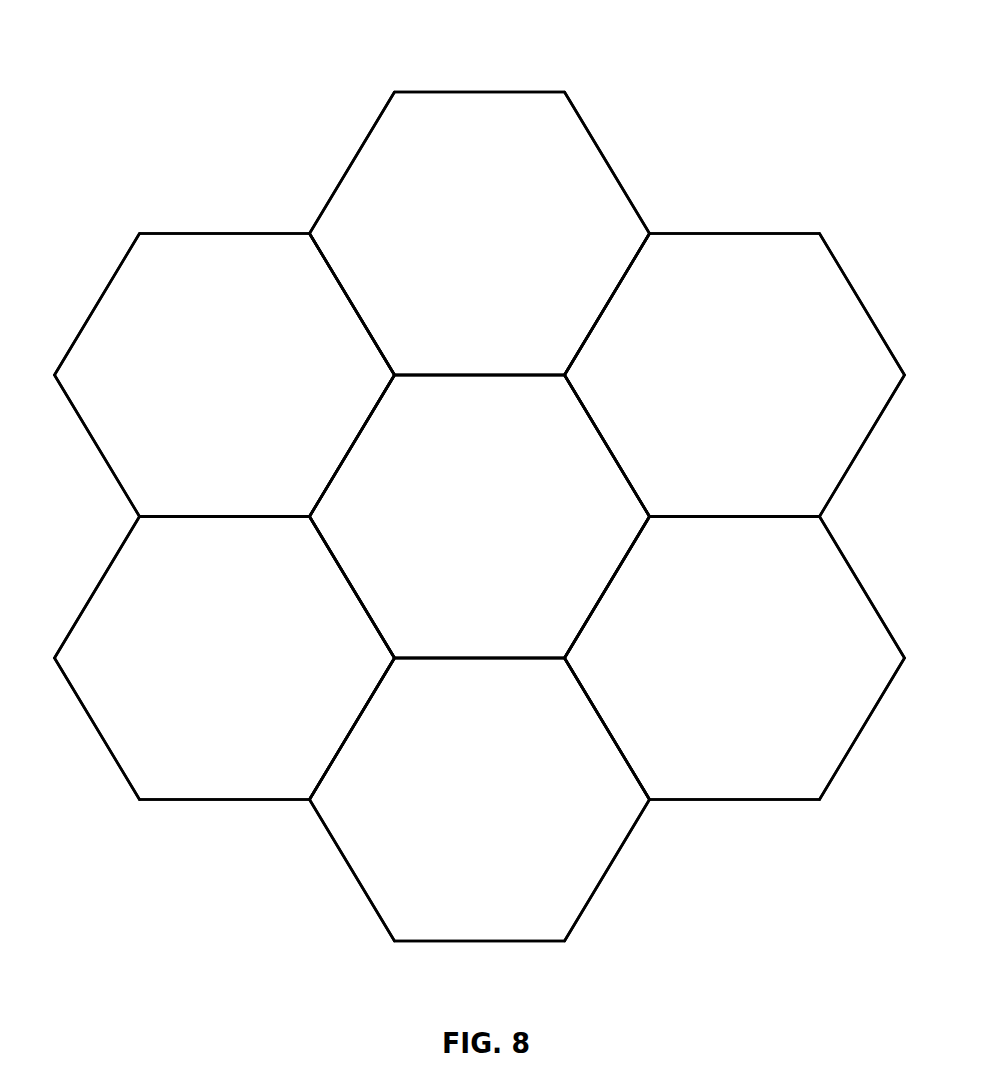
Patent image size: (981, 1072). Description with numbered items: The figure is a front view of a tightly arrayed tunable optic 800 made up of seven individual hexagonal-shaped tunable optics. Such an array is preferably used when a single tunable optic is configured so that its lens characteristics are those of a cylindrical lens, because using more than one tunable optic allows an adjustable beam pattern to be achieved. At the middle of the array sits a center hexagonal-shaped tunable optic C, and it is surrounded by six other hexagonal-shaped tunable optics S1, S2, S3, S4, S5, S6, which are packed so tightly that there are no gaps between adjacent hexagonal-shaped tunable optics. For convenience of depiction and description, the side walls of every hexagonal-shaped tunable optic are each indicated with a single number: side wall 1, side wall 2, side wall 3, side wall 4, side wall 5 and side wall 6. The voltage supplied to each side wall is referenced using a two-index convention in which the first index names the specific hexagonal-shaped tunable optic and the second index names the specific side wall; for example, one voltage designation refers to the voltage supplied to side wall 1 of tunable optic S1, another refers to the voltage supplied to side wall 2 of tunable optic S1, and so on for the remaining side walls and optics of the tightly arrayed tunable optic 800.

The tightly arrayed tunable optic 800 is at (137, 48).
The center hexagonal-shaped tunable optic C is at (464, 529).
The hexagonal-shaped tunable optic S1 is at (463, 246).
The hexagonal-shaped tunable optic S2 is at (208, 388).
The hexagonal-shaped tunable optic S3 is at (208, 670).
The hexagonal-shaped tunable optic S4 is at (463, 812).
The hexagonal-shaped tunable optic S5 is at (718, 670).
The hexagonal-shaped tunable optic S6 is at (718, 388).
The side wall 1 is at (480, 396).
The side wall 2 is at (352, 446).
The side wall 3 is at (352, 588).
The side wall 4 is at (480, 643).
The side wall 5 is at (607, 588).
The side wall 6 is at (607, 446).